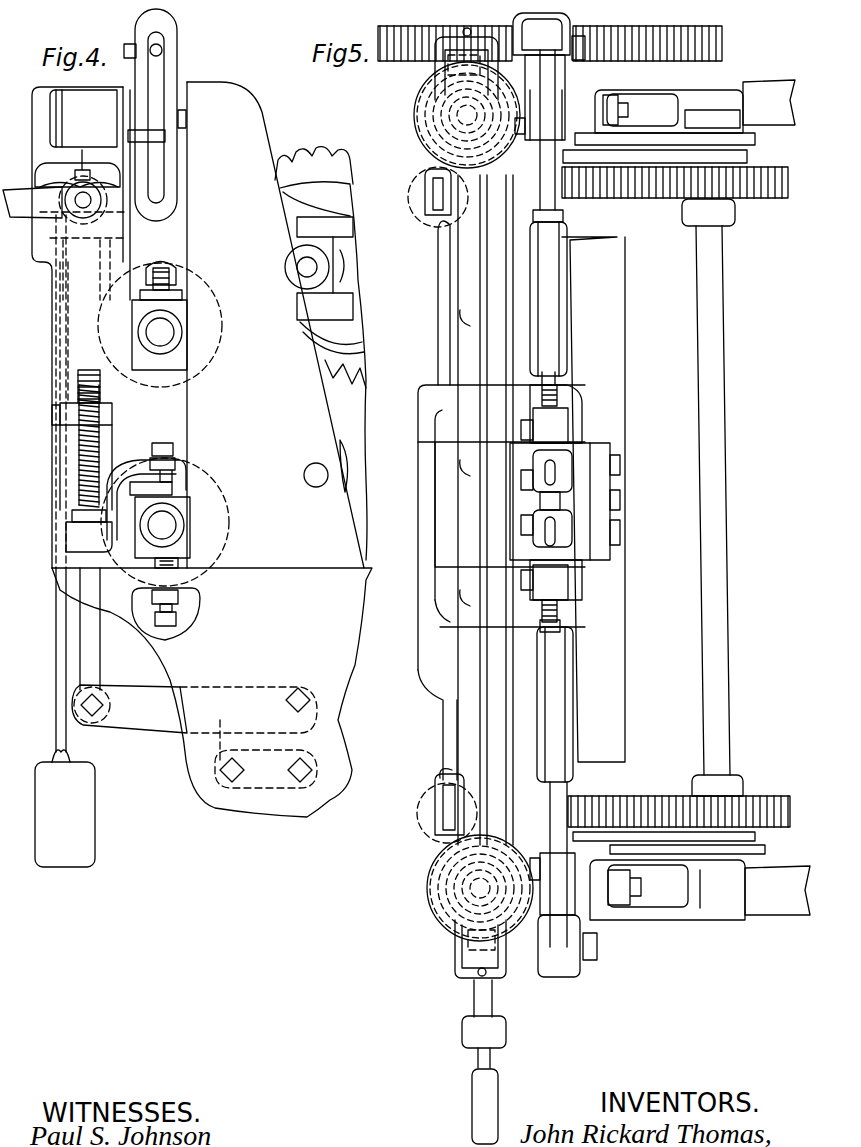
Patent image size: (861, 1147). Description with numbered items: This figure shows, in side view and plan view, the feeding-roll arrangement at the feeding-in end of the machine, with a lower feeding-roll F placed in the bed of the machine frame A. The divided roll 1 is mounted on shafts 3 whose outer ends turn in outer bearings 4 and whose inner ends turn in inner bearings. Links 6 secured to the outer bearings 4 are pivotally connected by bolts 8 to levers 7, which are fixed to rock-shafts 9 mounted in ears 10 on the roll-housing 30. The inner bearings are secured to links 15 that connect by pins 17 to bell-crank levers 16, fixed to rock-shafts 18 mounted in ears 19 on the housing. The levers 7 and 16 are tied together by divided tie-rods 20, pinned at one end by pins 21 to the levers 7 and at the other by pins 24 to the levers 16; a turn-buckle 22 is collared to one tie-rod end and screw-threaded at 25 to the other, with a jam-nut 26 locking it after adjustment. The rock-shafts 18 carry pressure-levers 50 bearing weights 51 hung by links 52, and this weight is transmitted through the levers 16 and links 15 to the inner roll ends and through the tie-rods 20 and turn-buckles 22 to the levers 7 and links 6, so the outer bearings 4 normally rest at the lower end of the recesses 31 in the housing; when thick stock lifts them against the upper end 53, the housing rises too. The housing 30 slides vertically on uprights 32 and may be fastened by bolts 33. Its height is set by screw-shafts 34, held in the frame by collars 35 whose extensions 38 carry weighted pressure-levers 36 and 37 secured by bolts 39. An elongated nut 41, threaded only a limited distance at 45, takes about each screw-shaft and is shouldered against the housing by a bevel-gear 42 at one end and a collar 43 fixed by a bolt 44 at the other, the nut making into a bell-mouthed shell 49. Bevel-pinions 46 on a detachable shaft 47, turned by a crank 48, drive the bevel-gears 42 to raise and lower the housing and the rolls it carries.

In FIG. 4, the roll 1 is at (218, 380).
In FIG. 5, the roll 1 is at (668, 497).
In FIG. 4, the shaft 3 is at (170, 332).
In FIG. 4, the outer bearing 4 is at (180, 362).
In FIG. 4, the link 6 is at (182, 170).
In FIG. 4, the lever 7 is at (190, 70).
In FIG. 5, the lever 7 is at (622, 940).
In FIG. 4, the bolt 8 is at (130, 137).
In FIG. 5, the bolt 8 is at (541, 493).
In FIG. 4, the rock-shaft 9 is at (188, 116).
In FIG. 5, the rock-shaft 9 is at (586, 55).
In FIG. 4, the ear 10 is at (175, 142).
In FIG. 5, the ear 10 is at (580, 60).
In FIG. 5, the link 15 is at (550, 515).
In FIG. 5, the lever 16 is at (560, 458).
In FIG. 5, the pin 17 is at (523, 502).
In FIG. 5, the rock-shaft 18 is at (585, 410).
In FIG. 5, the ear 19 is at (578, 398).
In FIG. 4, the tie-rod 20 is at (166, 40).
In FIG. 5, the tie-rod 20 is at (550, 172).
In FIG. 4, the pin 21 is at (134, 52).
In FIG. 5, the pin 21 is at (541, 34).
In FIG. 4, the turn-buckle 22 is at (165, 30).
In FIG. 5, the turn-buckle 22 is at (551, 502).
In FIG. 5, the pin 24 is at (530, 424).
In FIG. 5, the screw-thread 25 is at (570, 386).
In FIG. 5, the jam-nut 26 is at (560, 370).
In FIG. 4, the roll-housing 30 is at (123, 346).
In FIG. 5, the roll-housing 30 is at (655, 712).
In FIG. 4, the recess 31 is at (176, 300).
In FIG. 4, the upright 32 is at (311, 353).
In FIG. 5, the upright 32 is at (670, 118).
In FIG. 5, the bolt 33 is at (630, 110).
In FIG. 4, the screw-shaft 34 is at (100, 452).
In FIG. 4, the collar 35 is at (75, 528).
In FIG. 4, the pressure-lever 36 is at (137, 722).
In FIG. 4, the pressure-lever 37 is at (255, 780).
In FIG. 4, the extension 38 is at (95, 668).
In FIG. 4, the bolt 39 is at (106, 707).
In FIG. 4, the elongated nut 41 is at (62, 338).
In FIG. 5, the bevel-gear 42 is at (430, 135).
In FIG. 4, the collar 43 is at (112, 415).
In FIG. 4, the bolt 44 is at (52, 416).
In FIG. 4, the thread 45 is at (78, 385).
In FIG. 4, the bevel-pinion 46 is at (104, 202).
In FIG. 5, the bevel-pinion 46 is at (440, 72).
In FIG. 4, the shaft 47 is at (82, 150).
In FIG. 5, the shaft 47 is at (470, 275).
In FIG. 4, the crank 48 is at (25, 195).
In FIG. 5, the crank 48 is at (490, 1082).
In FIG. 4, the bell-mouthed shell 49 is at (65, 242).
In FIG. 5, the pressure-lever 50 is at (440, 335).
In FIG. 4, the weight 51 is at (65, 814).
In FIG. 5, the weight 51 is at (440, 200).
In FIG. 4, the link 52 is at (58, 678).
In FIG. 5, the link 52 is at (445, 220).
In FIG. 4, the upper end of recess 53 is at (195, 265).
In FIG. 4, the frame A is at (212, 449).
In FIG. 5, the frame A is at (594, 470).
In FIG. 4, the feeding-roll F is at (172, 522).